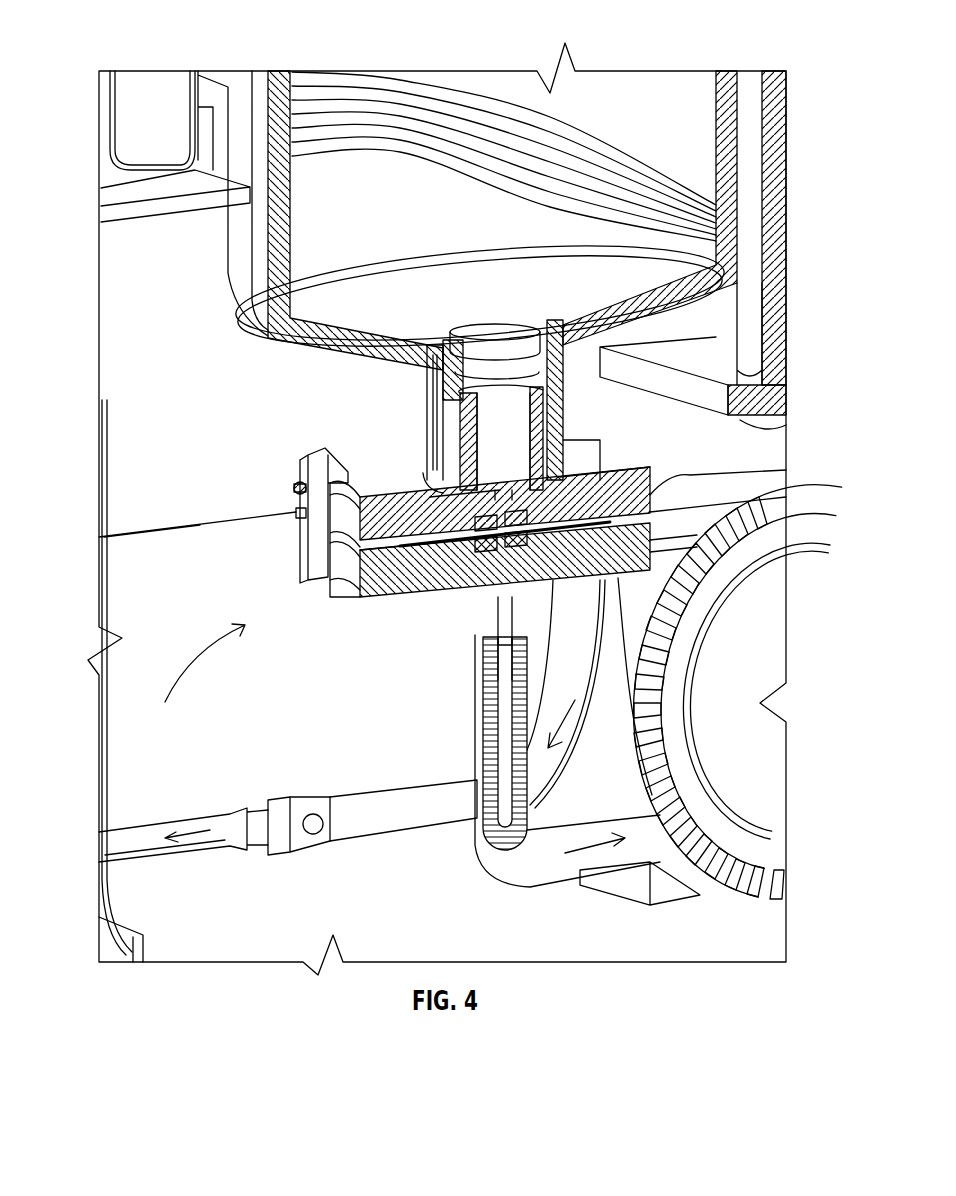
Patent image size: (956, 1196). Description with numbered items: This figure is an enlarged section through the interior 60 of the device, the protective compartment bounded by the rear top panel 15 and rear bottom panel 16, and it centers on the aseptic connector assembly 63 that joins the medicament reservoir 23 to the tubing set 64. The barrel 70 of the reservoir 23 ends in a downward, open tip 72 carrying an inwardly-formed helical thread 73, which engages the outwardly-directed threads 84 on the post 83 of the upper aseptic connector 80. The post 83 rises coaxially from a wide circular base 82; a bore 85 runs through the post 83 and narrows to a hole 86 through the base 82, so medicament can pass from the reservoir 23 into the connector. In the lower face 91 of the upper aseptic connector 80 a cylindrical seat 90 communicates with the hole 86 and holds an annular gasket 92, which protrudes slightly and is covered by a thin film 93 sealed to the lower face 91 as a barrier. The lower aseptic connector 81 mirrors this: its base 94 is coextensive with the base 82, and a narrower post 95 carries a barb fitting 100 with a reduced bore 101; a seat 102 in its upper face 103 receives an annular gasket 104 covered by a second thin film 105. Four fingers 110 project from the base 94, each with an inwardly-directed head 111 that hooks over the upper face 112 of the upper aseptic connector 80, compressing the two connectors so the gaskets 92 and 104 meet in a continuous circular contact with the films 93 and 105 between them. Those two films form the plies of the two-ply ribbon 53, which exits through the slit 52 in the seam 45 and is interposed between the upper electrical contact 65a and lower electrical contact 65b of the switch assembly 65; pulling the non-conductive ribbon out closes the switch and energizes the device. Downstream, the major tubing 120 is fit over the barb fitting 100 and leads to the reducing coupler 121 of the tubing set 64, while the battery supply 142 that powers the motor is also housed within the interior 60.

The rear top panel 15 is at (99, 468).
The rear bottom panel 16 is at (99, 558).
The medicament reservoir 23 is at (268, 98).
The seam 45 is at (135, 535).
The slit 52 is at (292, 502).
The two-ply ribbon 53 is at (425, 560).
The interior 60 is at (137, 323).
The aseptic connector assembly 63 is at (201, 675).
The tubing set 64 is at (491, 880).
The switch assembly 65 is at (300, 482).
The upper electrical contact 65a is at (294, 487).
The lower electrical contact 65b is at (296, 515).
The barrel 70 is at (740, 238).
The tip 72 is at (432, 385).
The helical thread 73 is at (427, 402).
The upper aseptic connector 80 is at (665, 480).
The lower aseptic connector 81 is at (690, 565).
The base 82 is at (660, 475).
The post 83 is at (565, 465).
The threads 84 is at (562, 400).
The bore 85 is at (505, 400).
The hole 86 is at (503, 495).
The seat 90 is at (470, 520).
The lower face 91 is at (375, 590).
The annular gasket 92 is at (440, 520).
The thin film 93 is at (630, 470).
The base 94 is at (338, 588).
The post 95 is at (478, 640).
The barb fitting 100 is at (530, 670).
The bore 101 is at (520, 640).
The seat 102 is at (515, 560).
The upper face 103 is at (383, 545).
The annular gasket 104 is at (483, 565).
The thin film 105 is at (540, 540).
The fingers 110 is at (305, 535).
The head 111 is at (340, 472).
The upper face 112 is at (395, 480).
The major tubing 120 is at (385, 790).
The reducing coupler 121 is at (302, 850).
The battery supply 142 is at (185, 172).